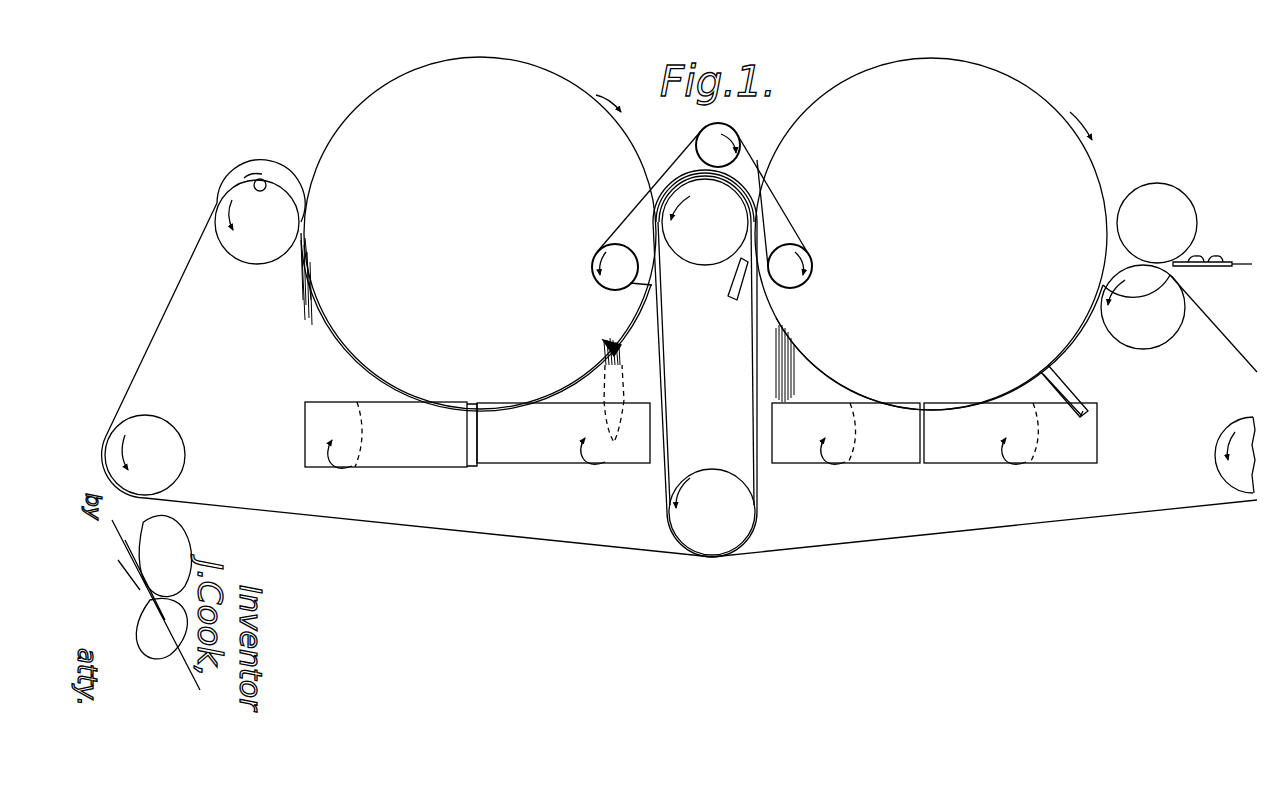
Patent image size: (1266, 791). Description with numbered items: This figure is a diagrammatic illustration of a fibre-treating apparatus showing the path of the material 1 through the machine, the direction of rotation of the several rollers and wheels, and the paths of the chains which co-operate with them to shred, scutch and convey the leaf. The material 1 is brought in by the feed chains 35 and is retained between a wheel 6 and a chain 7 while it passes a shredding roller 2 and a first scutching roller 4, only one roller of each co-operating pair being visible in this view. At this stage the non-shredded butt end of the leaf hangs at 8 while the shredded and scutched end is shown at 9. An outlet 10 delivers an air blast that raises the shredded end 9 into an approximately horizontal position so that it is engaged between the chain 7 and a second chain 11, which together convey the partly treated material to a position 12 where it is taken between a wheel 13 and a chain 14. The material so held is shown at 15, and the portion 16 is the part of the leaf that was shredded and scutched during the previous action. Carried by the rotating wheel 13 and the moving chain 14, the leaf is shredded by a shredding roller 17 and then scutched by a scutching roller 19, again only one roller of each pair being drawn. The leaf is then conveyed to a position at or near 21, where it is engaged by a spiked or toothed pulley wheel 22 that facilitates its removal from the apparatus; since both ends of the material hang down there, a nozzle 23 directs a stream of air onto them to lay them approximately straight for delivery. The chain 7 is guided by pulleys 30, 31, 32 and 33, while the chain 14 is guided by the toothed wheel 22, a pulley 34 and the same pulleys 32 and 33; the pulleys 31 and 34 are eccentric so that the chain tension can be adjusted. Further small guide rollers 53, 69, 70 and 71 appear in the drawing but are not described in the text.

The material 1 is at (1200, 257).
The shredding roller 2 is at (1047, 453).
The first scutching roller 4 is at (885, 455).
The wheel 6 is at (1045, 100).
The chain 7 is at (752, 228).
The non-shredded butt end of the leaf 8 is at (1065, 382).
The shredded and scutched end of the leaf 9 is at (782, 362).
The air blast outlet 10 is at (737, 263).
The chain 11 is at (768, 243).
The position 12 is at (657, 232).
The wheel 13 is at (578, 86).
The chain 14 is at (167, 307).
The material engaged between wheel and chain 15 is at (618, 380).
The part of the leaf 16 is at (620, 350).
The shredding roller 17 is at (575, 452).
The scutching roller 19 is at (417, 455).
The position 21 is at (298, 222).
The spiked or toothed pulley wheel 22 is at (248, 178).
The nozzle 23 is at (259, 192).
The pulley 30 is at (1143, 307).
The pulley 31 is at (1233, 473).
The pulley 32 is at (712, 512).
The pulley 33 is at (705, 217).
The pulley 34 is at (145, 455).
The feed chains 35 is at (1232, 270).
The roller 53 is at (1182, 213).
The roller 69 is at (608, 292).
The roller 70 is at (718, 138).
The roller 71 is at (793, 263).